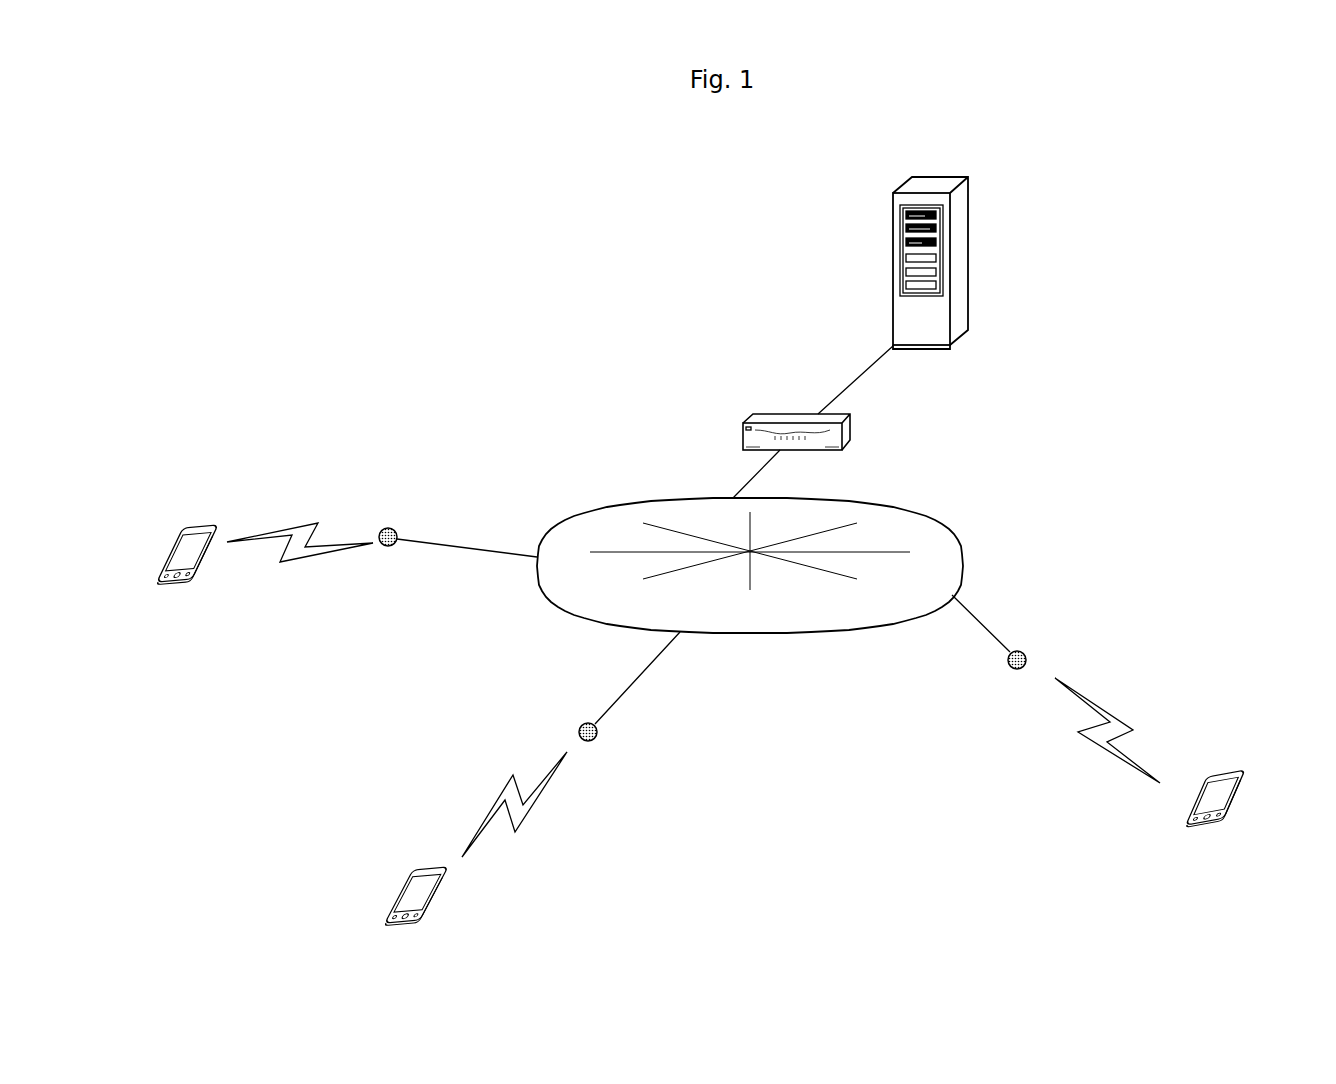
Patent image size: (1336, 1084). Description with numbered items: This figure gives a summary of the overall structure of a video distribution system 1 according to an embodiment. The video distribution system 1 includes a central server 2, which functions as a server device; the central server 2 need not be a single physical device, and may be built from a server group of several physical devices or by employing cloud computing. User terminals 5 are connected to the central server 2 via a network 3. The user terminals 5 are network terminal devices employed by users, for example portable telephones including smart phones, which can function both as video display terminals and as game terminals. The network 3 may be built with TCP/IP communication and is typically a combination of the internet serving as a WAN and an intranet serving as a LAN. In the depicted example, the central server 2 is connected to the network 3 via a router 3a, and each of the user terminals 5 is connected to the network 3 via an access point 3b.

The video distribution system 1 is at (250, 299).
The central server 2 is at (968, 242).
The network 3 is at (607, 433).
The router 3a is at (762, 414).
The access point 3b is at (396, 528).
The user terminal 5 is at (219, 524).